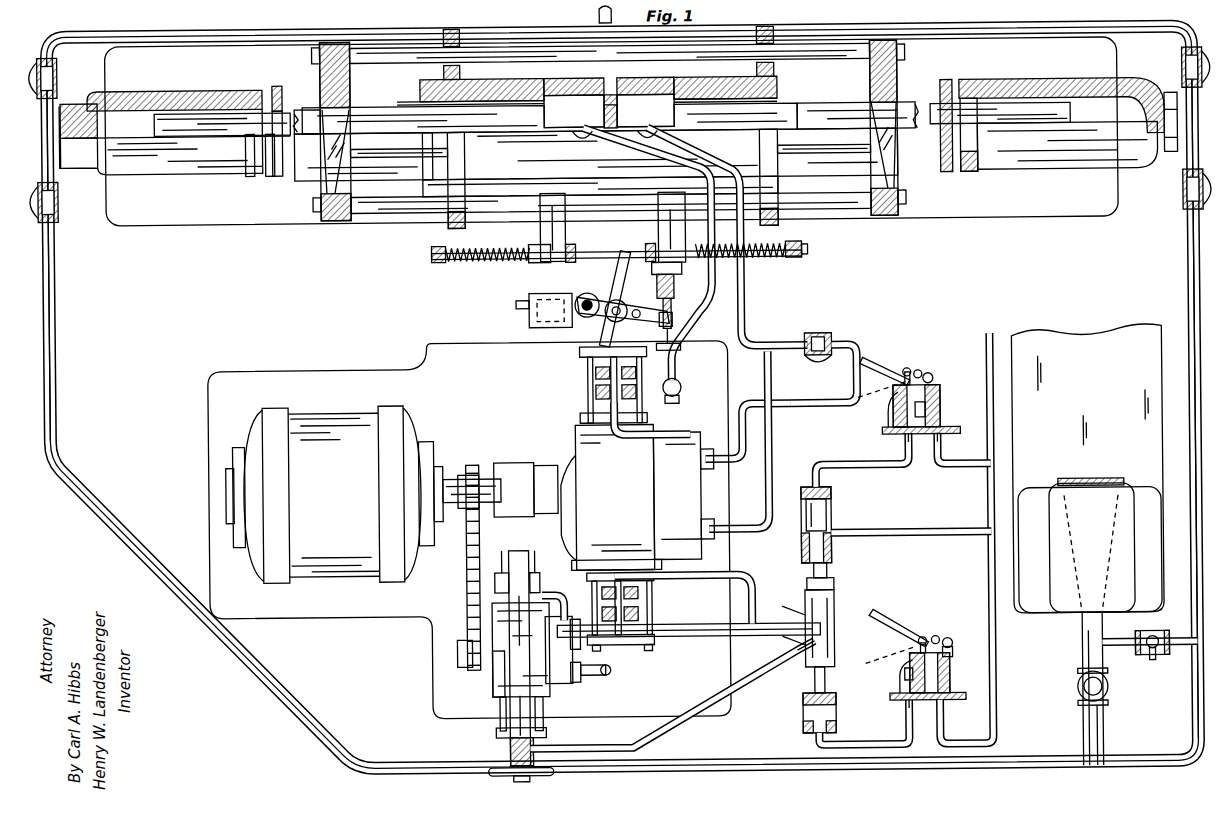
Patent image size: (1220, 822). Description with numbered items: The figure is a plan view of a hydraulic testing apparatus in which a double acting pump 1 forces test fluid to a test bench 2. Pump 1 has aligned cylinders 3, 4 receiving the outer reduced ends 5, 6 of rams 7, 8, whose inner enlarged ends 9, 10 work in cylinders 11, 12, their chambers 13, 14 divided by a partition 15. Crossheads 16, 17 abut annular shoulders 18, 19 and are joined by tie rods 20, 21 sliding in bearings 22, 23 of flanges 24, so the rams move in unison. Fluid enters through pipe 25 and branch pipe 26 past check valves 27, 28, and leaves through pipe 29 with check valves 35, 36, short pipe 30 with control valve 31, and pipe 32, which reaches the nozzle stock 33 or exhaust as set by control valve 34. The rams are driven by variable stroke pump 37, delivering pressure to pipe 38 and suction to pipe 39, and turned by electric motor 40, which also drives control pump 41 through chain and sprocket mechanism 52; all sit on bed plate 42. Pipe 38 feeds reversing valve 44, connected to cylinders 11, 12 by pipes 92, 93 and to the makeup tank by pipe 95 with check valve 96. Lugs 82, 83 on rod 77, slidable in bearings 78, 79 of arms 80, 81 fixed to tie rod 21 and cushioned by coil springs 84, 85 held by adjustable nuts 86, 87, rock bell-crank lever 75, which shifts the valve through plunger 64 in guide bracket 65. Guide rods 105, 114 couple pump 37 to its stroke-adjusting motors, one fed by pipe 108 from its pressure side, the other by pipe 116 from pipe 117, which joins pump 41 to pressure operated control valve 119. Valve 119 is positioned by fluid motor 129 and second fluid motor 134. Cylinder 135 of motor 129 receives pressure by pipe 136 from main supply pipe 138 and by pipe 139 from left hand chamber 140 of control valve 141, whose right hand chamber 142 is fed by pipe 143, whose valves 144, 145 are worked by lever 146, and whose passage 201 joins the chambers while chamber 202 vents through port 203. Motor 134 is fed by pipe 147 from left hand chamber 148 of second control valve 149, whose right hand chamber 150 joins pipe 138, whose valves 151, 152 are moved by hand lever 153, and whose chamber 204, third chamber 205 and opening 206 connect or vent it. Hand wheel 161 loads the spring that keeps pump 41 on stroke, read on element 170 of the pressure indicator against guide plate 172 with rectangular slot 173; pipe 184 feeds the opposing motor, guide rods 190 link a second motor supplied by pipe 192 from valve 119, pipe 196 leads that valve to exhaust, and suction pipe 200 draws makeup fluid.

The double acting pump 1 is at (1015, 186).
The test bench 2 is at (1087, 468).
The cylinder 3 is at (172, 92).
The cylinder 4 is at (1052, 90).
The outer reduced end of ram 5 is at (232, 126).
The outer reduced end of ram 6 is at (1008, 122).
The ram 7 is at (316, 118).
The ram 8 is at (945, 115).
The inner enlarged end of ram 9 is at (510, 125).
The inner enlarged end of ram 10 is at (822, 122).
The cylinder 11 is at (545, 90).
The cylinder 12 is at (712, 90).
The chamber 13 is at (575, 110).
The chamber 14 is at (660, 112).
The partition 15 is at (621, 112).
The crosshead 16 is at (332, 180).
The crosshead 17 is at (905, 180).
The annular shoulder 18 is at (366, 160).
The annular shoulder 19 is at (855, 160).
The tie rod 20 is at (400, 66).
The tie rod 21 is at (386, 216).
The bearing 22 is at (466, 40).
The bearing 23 is at (452, 224).
The laterally extending flanges 24 is at (425, 190).
The pipe 25 is at (602, 18).
The branch pipe 26 is at (955, 30).
The check valve 27 is at (62, 62).
The check valve 28 is at (1185, 66).
The pipe 29 is at (58, 372).
The short pipe 30 is at (1190, 660).
The control valve 31 is at (1147, 666).
The pipe 32 is at (1080, 646).
The nozzle stock 33 is at (1101, 621).
The control valve 34 is at (1075, 695).
The check valve 35 is at (62, 216).
The check valve 36 is at (1185, 208).
The high pressure variable stroke pump 37 is at (575, 440).
The pressure pipe 38 is at (735, 462).
The suction pipe 39 is at (773, 450).
The electric motor 40 is at (415, 426).
The control pump 41 is at (578, 684).
The bed plate 42 is at (392, 621).
The reversing valve 44 is at (683, 393).
The chain and sprocket mechanism 52 is at (465, 578).
The plunger 64 is at (588, 322).
The guide bracket 65 is at (540, 327).
The bell-crank lever 75 is at (616, 264).
The rod 77 is at (603, 256).
The bearing 78 is at (530, 264).
The bearing 79 is at (683, 277).
The arm 80 is at (567, 236).
The arm 81 is at (687, 236).
The lug 82 is at (570, 267).
The lug 83 is at (652, 249).
The coil spring 84 is at (470, 265).
The coil spring 85 is at (782, 265).
The adjustable nut 86 is at (433, 258).
The adjustable nut 87 is at (809, 256).
The pipe 92 is at (722, 346).
The pipe 93 is at (746, 310).
The pipe 95 is at (820, 410).
The check valve 96 is at (822, 340).
The guide rods 105 is at (588, 384).
The pipe 108 is at (640, 442).
The guide rods 114 is at (585, 590).
The pipe 116 is at (748, 585).
The pipe 117 is at (695, 642).
The pressure operated control valve 119 is at (832, 589).
The fluid motor 129 is at (800, 530).
The second fluid motor 134 is at (800, 718).
The cylinder 135 is at (830, 517).
The pipe 136 is at (926, 539).
The main supply pipe 138 is at (988, 506).
The pipe 139 is at (864, 476).
The left hand chamber 140 is at (900, 430).
The control valve 141 is at (940, 405).
The right hand chamber 142 is at (940, 420).
The pipe 143 is at (930, 476).
The valve 144 is at (905, 378).
The valve 145 is at (931, 393).
The lever 146 is at (880, 372).
The pipe 147 is at (862, 748).
The left hand chamber 148 is at (905, 690).
The second control valve 149 is at (950, 668).
The right hand chamber 150 is at (948, 683).
The valve 151 is at (905, 660).
The valve 152 is at (940, 645).
The hand lever 153 is at (880, 621).
The hand wheel 161 is at (540, 781).
The element of pressure indicator 170 is at (517, 724).
The guide plate 172 is at (517, 637).
The rectangular slot 173 is at (490, 672).
The pipe 184 is at (562, 598).
The guide rods 190 is at (497, 712).
The pipe 192 is at (690, 722).
The pipe 196 is at (790, 641).
The suction pipe 200 is at (598, 679).
The passage 201 is at (937, 443).
The chamber 202 is at (895, 410).
The port 203 is at (897, 441).
The chamber 204 is at (940, 709).
The third chamber 205 is at (905, 680).
The opening 206 is at (910, 705).